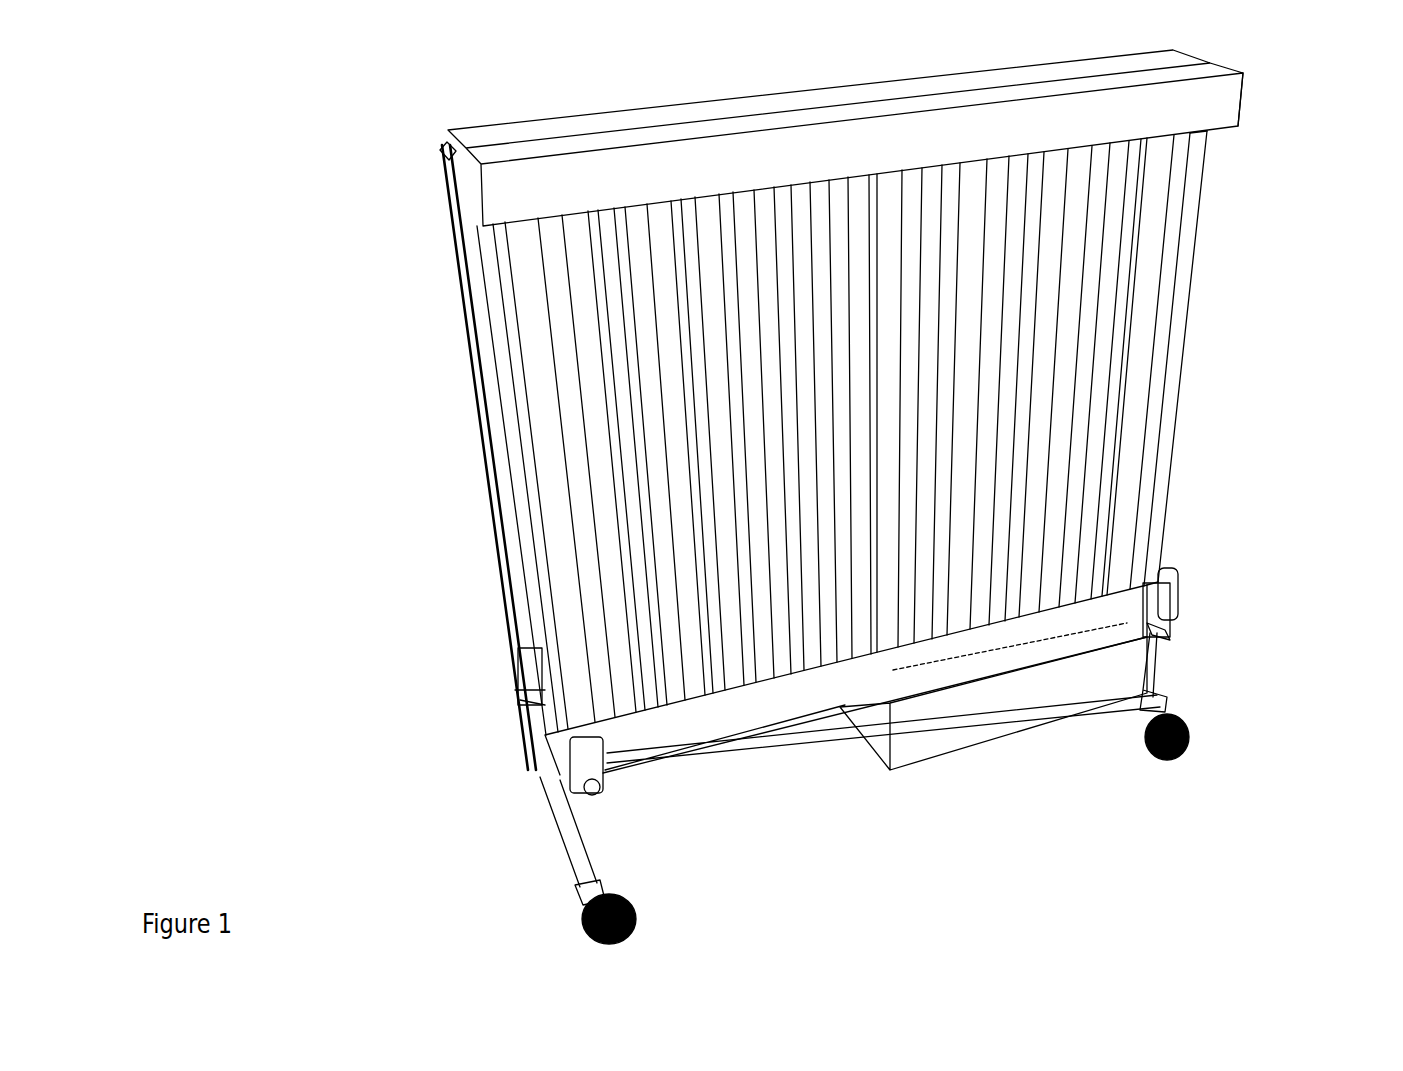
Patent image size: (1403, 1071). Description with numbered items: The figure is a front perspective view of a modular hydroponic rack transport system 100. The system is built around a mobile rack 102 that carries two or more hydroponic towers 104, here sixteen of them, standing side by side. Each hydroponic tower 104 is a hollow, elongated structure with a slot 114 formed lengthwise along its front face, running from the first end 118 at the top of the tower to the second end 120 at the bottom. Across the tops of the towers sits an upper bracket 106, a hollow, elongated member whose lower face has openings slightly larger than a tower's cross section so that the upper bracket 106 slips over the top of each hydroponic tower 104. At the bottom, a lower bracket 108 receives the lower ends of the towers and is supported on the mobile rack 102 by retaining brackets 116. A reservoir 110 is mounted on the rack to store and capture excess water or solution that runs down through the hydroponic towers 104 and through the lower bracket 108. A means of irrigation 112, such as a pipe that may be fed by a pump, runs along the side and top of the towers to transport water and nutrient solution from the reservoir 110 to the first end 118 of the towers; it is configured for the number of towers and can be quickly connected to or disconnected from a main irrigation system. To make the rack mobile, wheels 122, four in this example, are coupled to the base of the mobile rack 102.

The modular hydroponic rack transport system 100 is at (343, 172).
The mobile rack 102 is at (1152, 690).
The hydroponic towers 104 is at (1070, 340).
The upper bracket 106 is at (628, 173).
The lower bracket 108 is at (412, 692).
The reservoir 110 is at (955, 727).
The means of irrigation 112 is at (470, 335).
The slot 114 is at (1197, 205).
The retaining brackets 116 is at (587, 772).
The first end 118 is at (1245, 130).
The second end 120 is at (1173, 548).
The wheels 122 is at (1185, 755).